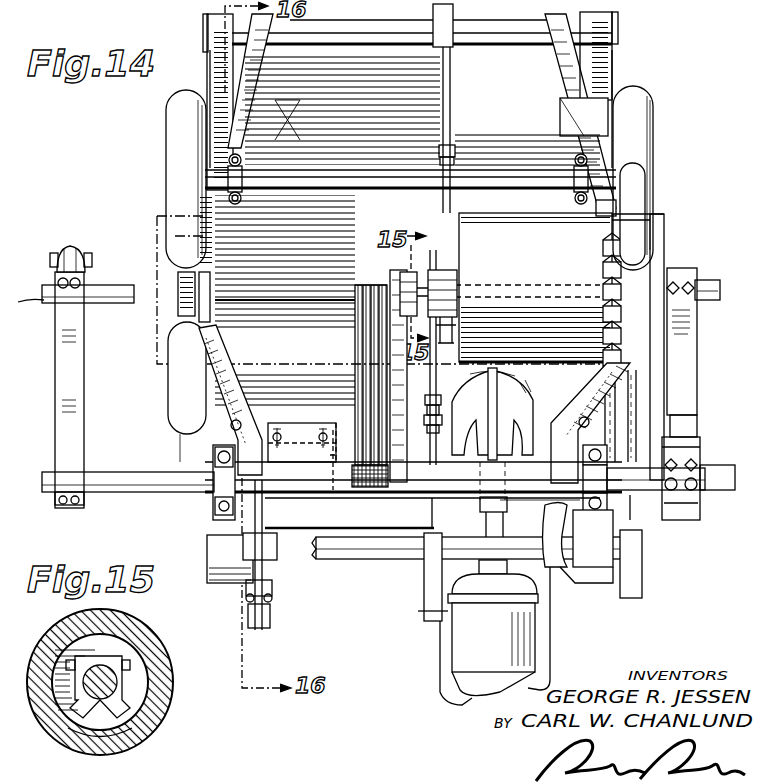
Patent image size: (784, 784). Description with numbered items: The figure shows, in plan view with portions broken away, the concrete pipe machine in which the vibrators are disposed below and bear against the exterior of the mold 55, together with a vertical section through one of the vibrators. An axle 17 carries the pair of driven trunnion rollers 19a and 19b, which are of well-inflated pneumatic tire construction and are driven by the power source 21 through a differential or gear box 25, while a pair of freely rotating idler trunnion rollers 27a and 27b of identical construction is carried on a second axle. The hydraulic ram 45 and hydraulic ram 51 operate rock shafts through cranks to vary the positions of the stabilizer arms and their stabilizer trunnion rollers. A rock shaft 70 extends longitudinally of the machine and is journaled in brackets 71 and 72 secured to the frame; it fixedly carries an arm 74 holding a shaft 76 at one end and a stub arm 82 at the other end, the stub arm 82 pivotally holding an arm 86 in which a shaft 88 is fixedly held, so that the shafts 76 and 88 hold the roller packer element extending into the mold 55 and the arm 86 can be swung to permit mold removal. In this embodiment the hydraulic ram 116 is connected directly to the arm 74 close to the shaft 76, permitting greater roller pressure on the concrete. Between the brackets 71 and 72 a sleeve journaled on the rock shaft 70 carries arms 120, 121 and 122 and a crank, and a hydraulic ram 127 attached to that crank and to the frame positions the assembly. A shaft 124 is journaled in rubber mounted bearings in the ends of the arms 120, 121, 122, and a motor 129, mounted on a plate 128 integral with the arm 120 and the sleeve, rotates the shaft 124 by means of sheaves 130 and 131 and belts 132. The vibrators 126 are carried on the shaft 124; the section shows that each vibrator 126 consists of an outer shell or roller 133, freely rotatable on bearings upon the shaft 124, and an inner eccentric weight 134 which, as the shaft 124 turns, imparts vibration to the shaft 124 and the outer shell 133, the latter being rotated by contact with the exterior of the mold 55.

In FIG. 14, the axle 17 is at (313, 400).
In FIG. 14, the trunnion roller 19a is at (176, 427).
In FIG. 14, the trunnion roller 19b is at (636, 500).
In FIG. 14, the power source 21 is at (522, 645).
In FIG. 14, the differential or gear box 25 is at (512, 392).
In FIG. 14, the idler trunnion roller 27a is at (172, 153).
In FIG. 14, the idler trunnion roller 27b is at (638, 131).
In FIG. 14, the hydraulic ram 45 is at (448, 208).
In FIG. 14, the hydraulic ram 51 is at (438, 402).
In FIG. 14, the mold 55 is at (658, 228).
In FIG. 14, the rock shaft 70 is at (152, 480).
In FIG. 14, the bracket 71 is at (602, 490).
In FIG. 14, the bracket 72 is at (218, 490).
In FIG. 14, the arm 74 is at (62, 360).
In FIG. 14, the shaft 76 is at (110, 287).
In FIG. 14, the stub arm 82 is at (695, 460).
In FIG. 14, the arm 86 is at (688, 330).
In FIG. 14, the shaft 88 is at (708, 280).
In FIG. 14, the hydraulic ram 116 is at (70, 250).
In FIG. 14, the arm 120 is at (243, 392).
In FIG. 14, the arm 121 is at (400, 379).
In FIG. 14, the arm 122 is at (560, 438).
In FIG. 14, the shaft 124 is at (281, 295).
In FIG. 15, the shaft 124 is at (105, 695).
In FIG. 14, the vibrator 126 is at (404, 276).
In FIG. 14, the hydraulic ram 127 is at (276, 582).
In FIG. 14, the plate 128 is at (300, 478).
In FIG. 14, the motor 129 is at (332, 497).
In FIG. 14, the sheave 130 is at (401, 494).
In FIG. 14, the sheave 131 is at (357, 312).
In FIG. 14, the belts 132 is at (358, 353).
In FIG. 15, the outer shell or roller 133 is at (160, 652).
In FIG. 15, the eccentric weight 134 is at (90, 712).